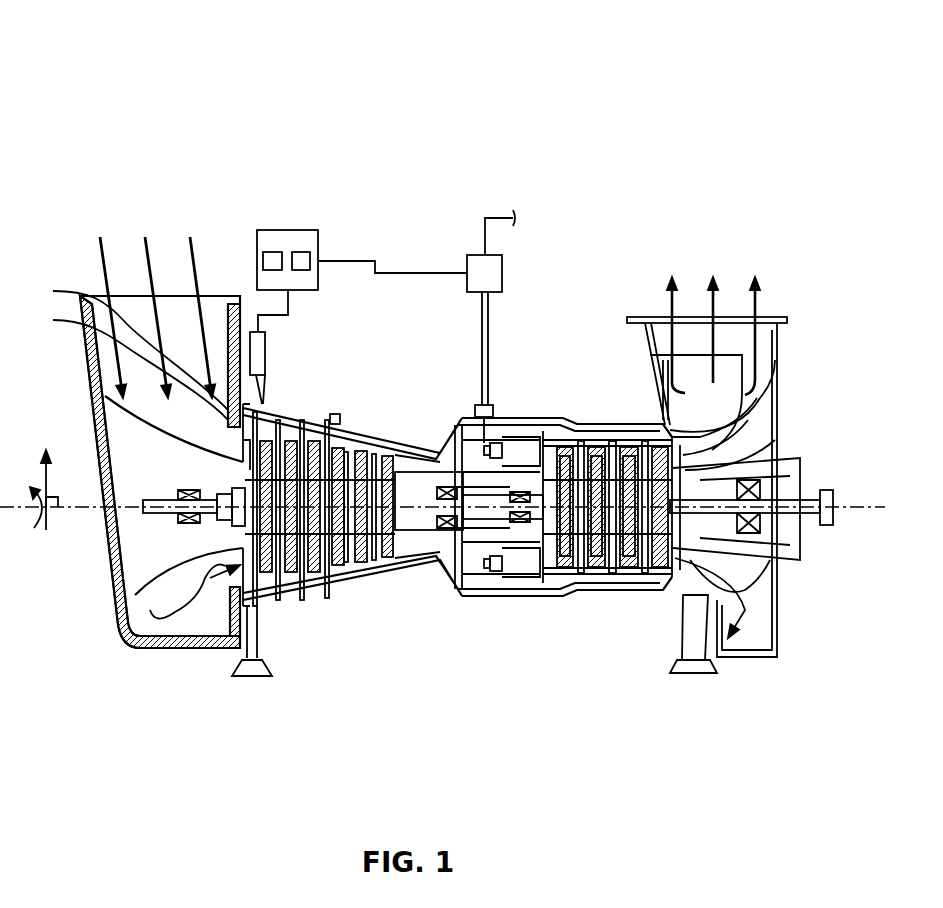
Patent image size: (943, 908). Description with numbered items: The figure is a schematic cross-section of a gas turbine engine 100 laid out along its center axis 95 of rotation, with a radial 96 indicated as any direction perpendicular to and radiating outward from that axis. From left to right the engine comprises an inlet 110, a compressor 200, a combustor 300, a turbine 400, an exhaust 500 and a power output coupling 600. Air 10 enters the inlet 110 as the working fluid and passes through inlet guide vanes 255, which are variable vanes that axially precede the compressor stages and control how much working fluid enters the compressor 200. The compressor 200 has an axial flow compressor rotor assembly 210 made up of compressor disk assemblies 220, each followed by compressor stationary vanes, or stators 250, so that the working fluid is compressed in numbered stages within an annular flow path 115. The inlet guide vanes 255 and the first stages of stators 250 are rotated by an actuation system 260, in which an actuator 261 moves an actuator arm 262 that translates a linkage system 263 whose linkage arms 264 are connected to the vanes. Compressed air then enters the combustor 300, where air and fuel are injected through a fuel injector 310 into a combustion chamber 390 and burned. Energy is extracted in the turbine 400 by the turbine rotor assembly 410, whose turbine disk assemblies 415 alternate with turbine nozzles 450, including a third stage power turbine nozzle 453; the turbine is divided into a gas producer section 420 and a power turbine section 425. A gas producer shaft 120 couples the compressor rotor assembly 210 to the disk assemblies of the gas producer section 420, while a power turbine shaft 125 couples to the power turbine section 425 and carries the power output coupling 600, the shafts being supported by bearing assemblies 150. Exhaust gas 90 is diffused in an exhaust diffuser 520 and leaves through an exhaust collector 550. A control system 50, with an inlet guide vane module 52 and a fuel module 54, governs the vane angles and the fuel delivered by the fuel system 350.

The gas turbine engine 100 is at (107, 56).
The inlet 110 is at (237, 183).
The compressor 200 is at (428, 183).
The combustor 300 is at (536, 183).
The turbine 400 is at (667, 183).
The exhaust 500 is at (807, 205).
The air 10 is at (103, 262).
The control system 50 is at (262, 230).
The inlet guide vane module 52 is at (258, 252).
The fuel module 54 is at (318, 258).
The fuel system 350 is at (466, 264).
The actuator arm 262 is at (120, 343).
The linkage arms 264 is at (321, 662).
The actuator 261 is at (268, 340).
The actuation system 260 is at (302, 335).
The compressor stationary vanes (stators) 250 is at (318, 410).
The linkage system 263 is at (335, 422).
The fuel injector 310 is at (482, 407).
The combustion chamber 390 is at (505, 440).
The turbine nozzles 450 is at (650, 440).
The exhaust collector 550 is at (645, 357).
The exhaust gas 90 is at (671, 305).
The exhaust diffuser 520 is at (683, 427).
The power turbine shaft 125 is at (808, 500).
The power output coupling 600 is at (833, 503).
The bearing assemblies 150 is at (196, 522).
The annular flow path 115 is at (222, 431).
The gas producer shaft 120 is at (158, 503).
The inlet guide vanes 255 is at (238, 458).
The radial 96 is at (48, 462).
The center axis 95 is at (38, 510).
The compressor disk assemblies 220 is at (298, 607).
The compressor rotor assembly 210 is at (338, 653).
The turbine disk assemblies 415 is at (582, 575).
The third stage power turbine nozzle 453 is at (615, 565).
The turbine rotor assembly 410 is at (602, 660).
The gas producer section 420 is at (548, 716).
The power turbine section 425 is at (680, 716).